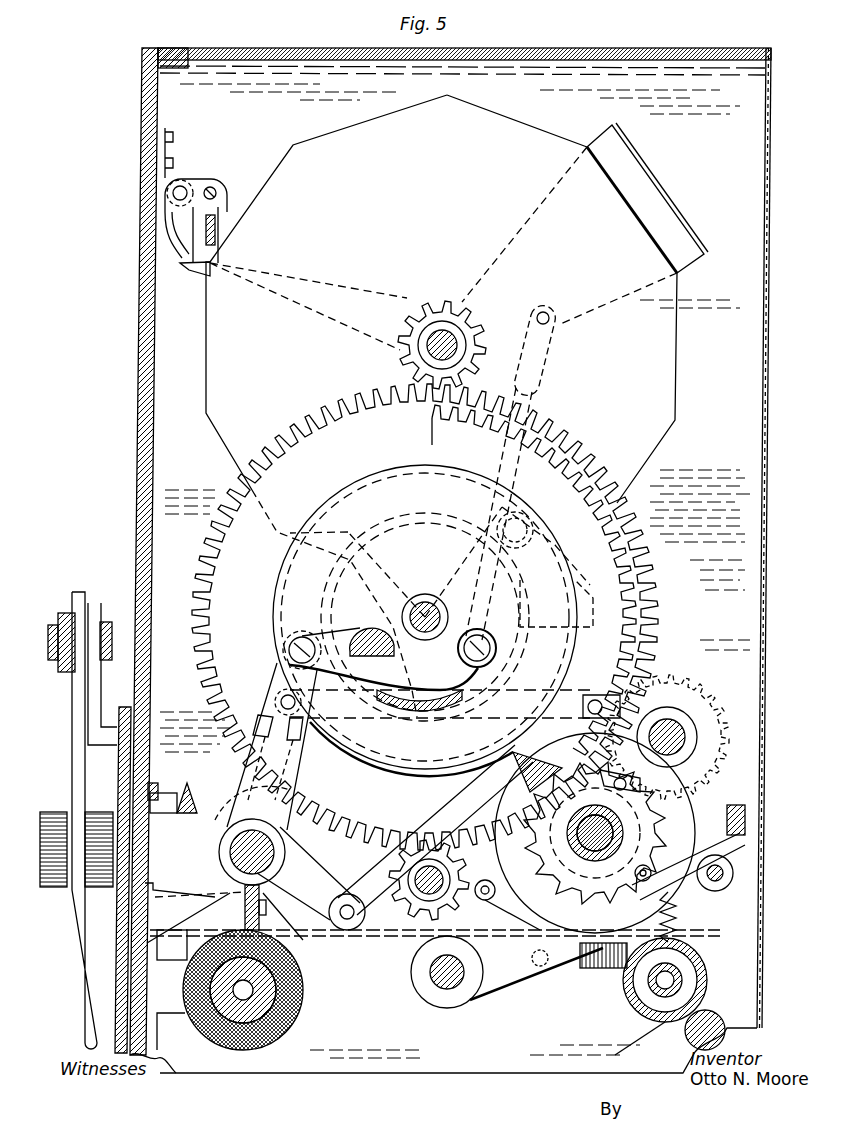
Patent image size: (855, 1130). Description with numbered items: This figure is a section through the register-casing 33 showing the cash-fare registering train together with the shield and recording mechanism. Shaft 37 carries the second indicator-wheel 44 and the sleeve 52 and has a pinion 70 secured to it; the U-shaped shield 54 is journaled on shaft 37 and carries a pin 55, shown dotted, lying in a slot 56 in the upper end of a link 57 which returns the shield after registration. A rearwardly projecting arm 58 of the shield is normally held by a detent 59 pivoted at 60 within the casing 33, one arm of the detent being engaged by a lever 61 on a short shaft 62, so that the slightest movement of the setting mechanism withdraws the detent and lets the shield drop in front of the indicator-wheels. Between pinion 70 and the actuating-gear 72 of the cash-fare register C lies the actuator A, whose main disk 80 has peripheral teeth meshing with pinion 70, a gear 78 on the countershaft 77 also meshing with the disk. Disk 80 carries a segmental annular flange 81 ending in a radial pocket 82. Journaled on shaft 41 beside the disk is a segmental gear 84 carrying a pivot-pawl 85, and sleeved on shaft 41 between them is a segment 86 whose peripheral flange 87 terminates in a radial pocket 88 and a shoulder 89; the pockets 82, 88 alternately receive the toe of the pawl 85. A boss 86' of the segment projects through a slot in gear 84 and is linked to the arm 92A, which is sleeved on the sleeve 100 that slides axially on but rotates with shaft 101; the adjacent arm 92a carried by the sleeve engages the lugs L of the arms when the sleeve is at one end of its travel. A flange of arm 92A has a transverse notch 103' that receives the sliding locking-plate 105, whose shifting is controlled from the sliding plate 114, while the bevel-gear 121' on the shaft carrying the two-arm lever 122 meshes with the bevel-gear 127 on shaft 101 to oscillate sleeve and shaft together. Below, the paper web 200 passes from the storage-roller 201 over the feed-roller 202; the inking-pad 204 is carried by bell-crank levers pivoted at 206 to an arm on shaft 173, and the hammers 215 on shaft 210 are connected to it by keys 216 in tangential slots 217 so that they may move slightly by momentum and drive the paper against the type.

The register-casing 33 is at (142, 384).
The shaft 37 is at (470, 318).
The shaft 41 is at (424, 596).
The second indicator-wheel 44 is at (228, 430).
The sleeve 52 is at (402, 345).
The U-shaped shield 54 is at (670, 216).
The pin 55 is at (553, 314).
The slot 56 is at (550, 356).
The link 57 is at (540, 402).
The rearwardly projecting arm 58 is at (206, 272).
The detent 59 is at (179, 260).
The pivot 60 is at (181, 186).
The lever 61 is at (212, 186).
The short shaft 62 is at (140, 250).
The pinion 70 is at (426, 300).
The actuating-gear 72 is at (540, 792).
The countershaft 77 is at (420, 898).
The gear 78 is at (424, 902).
The main disk 80 is at (218, 522).
The segmental annular flange 81 is at (556, 546).
The radial pocket 82 is at (640, 619).
The segmental gear 84 is at (630, 577).
The pivot-pawl 85 is at (560, 607).
The segment 86 is at (425, 601).
The boss 86' is at (436, 750).
The peripheral flange 87 is at (444, 524).
The radial pocket 88 is at (522, 600).
The shoulder 89 is at (520, 652).
The arm 92A is at (292, 672).
The arm 92a is at (296, 792).
The sleeve 100 is at (240, 828).
The shaft 101 is at (285, 838).
The transverse notch 103' is at (328, 954).
The sliding locking-plate 105 is at (245, 897).
The sliding plate 114 is at (84, 975).
The bevel-gear 121' is at (115, 790).
The two-arm lever 122 is at (78, 590).
The bevel-gear 127 is at (158, 812).
The shaft 173 is at (680, 925).
The paper web 200 is at (447, 990).
The storage-roller 201 is at (247, 1040).
The feed-roller 202 is at (632, 997).
The inking-pad 204 is at (527, 962).
The pivot 206 is at (531, 958).
The shaft 210 is at (440, 985).
The hammer 215 is at (592, 968).
The key 216 is at (486, 902).
The tangential slot 217 is at (452, 988).
The actuator A is at (405, 617).
The cash-fare-register mechanism C is at (705, 792).
The lug L is at (268, 716).